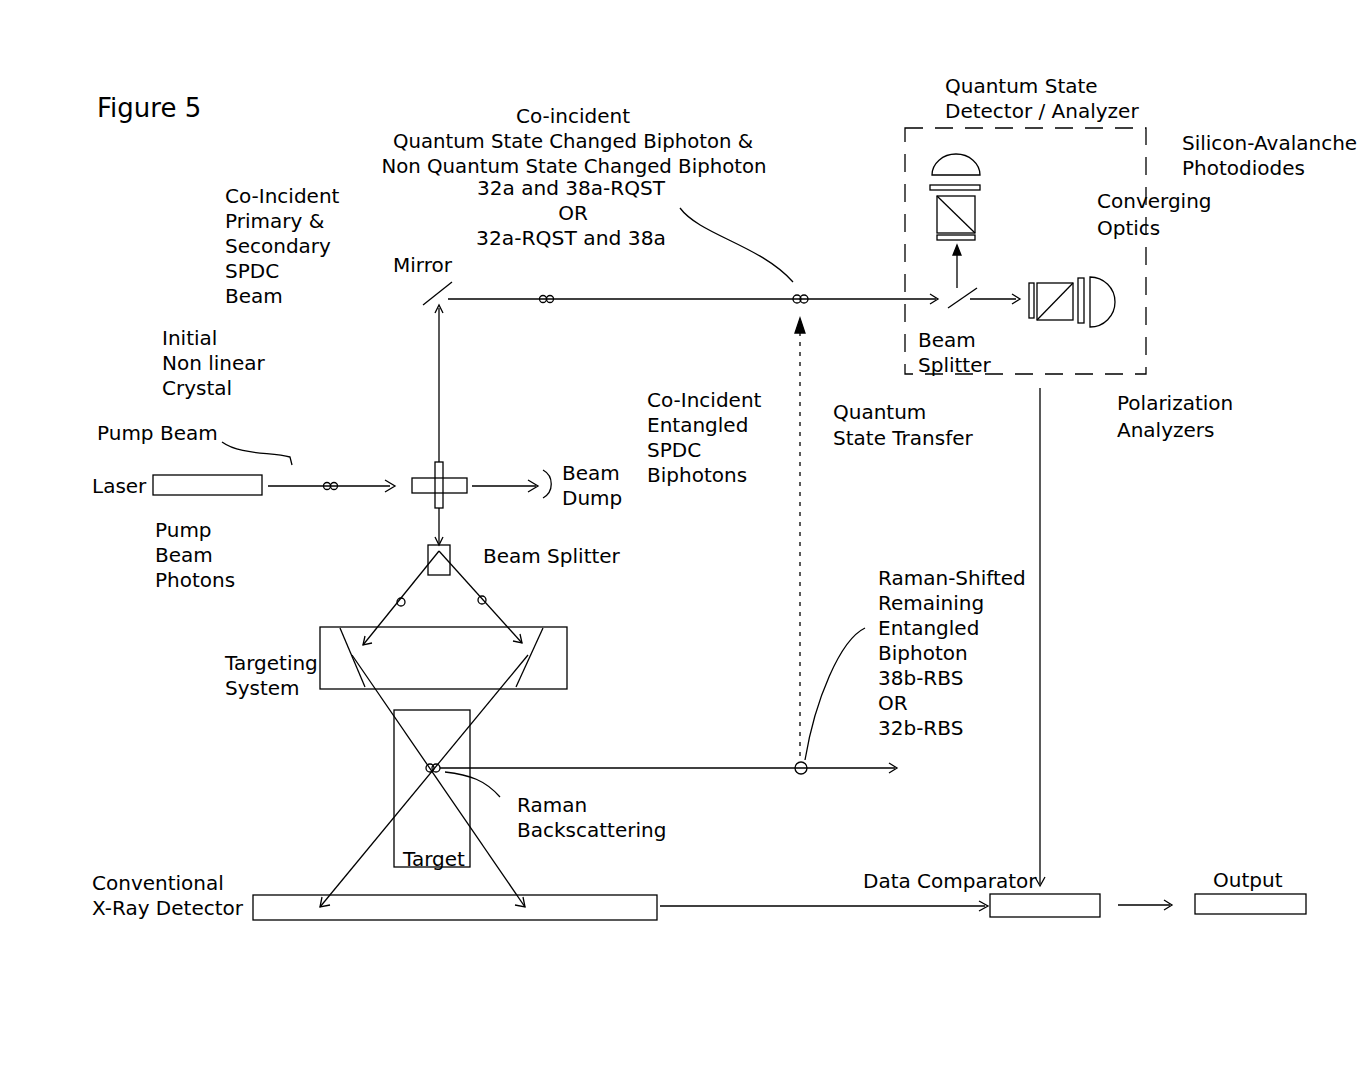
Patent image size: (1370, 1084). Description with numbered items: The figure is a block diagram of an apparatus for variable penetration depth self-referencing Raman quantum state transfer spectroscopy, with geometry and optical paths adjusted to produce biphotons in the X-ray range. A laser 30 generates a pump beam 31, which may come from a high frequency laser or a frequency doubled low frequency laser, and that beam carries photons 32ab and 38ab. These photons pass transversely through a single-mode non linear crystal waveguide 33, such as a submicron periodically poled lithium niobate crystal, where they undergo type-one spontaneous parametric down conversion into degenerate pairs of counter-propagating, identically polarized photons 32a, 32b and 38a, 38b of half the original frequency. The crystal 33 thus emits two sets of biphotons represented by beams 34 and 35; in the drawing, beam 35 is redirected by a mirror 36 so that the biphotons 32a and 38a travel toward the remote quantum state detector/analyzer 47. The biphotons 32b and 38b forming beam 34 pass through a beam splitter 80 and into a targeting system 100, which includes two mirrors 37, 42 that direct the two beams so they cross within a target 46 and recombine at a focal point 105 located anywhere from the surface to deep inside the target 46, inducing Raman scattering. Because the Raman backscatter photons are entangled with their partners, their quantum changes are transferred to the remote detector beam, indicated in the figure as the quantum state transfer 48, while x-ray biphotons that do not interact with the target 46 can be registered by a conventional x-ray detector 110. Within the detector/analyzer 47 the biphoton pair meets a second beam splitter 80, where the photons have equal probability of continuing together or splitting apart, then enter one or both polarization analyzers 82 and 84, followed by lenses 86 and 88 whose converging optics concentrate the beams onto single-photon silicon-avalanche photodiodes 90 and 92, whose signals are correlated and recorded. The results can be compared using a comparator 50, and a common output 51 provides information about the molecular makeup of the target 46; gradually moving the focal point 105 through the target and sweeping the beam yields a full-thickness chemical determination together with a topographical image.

The laser 30 is at (207, 485).
The pump beam 31 is at (331, 477).
The pump beam photon 32ab is at (218, 563).
The pump beam photon 38ab is at (357, 475).
The non linear crystal waveguide 33 is at (248, 390).
The beam 34 is at (452, 526).
The beam 35 is at (305, 272).
The Mirror 36 is at (434, 289).
The photon 38a is at (666, 286).
The photon 32a is at (720, 378).
The beam splitter 80 is at (707, 431).
The photon 32b is at (406, 701).
The photon 38b is at (475, 679).
The targeting system 100 is at (422, 658).
The mirror 37 is at (347, 657).
The mirror 42 is at (538, 657).
The target 46 is at (432, 788).
The focal point 105 is at (413, 768).
The Quantum state transfer 48 is at (812, 540).
The conventional x-ray detector 110 is at (455, 907).
The comparator 50 is at (1045, 906).
The output 51 is at (1250, 906).
The quantum state detector/analyzer 47 is at (1025, 236).
The silicon-avalanche photodiode 90 is at (1173, 150).
The silicon-avalanche photodiode 92 is at (1262, 187).
The polarization analyzer 82 is at (1110, 415).
The polarization analyzer 84 is at (1110, 415).
The lens 86 is at (1088, 198).
The lens 88 is at (1088, 198).